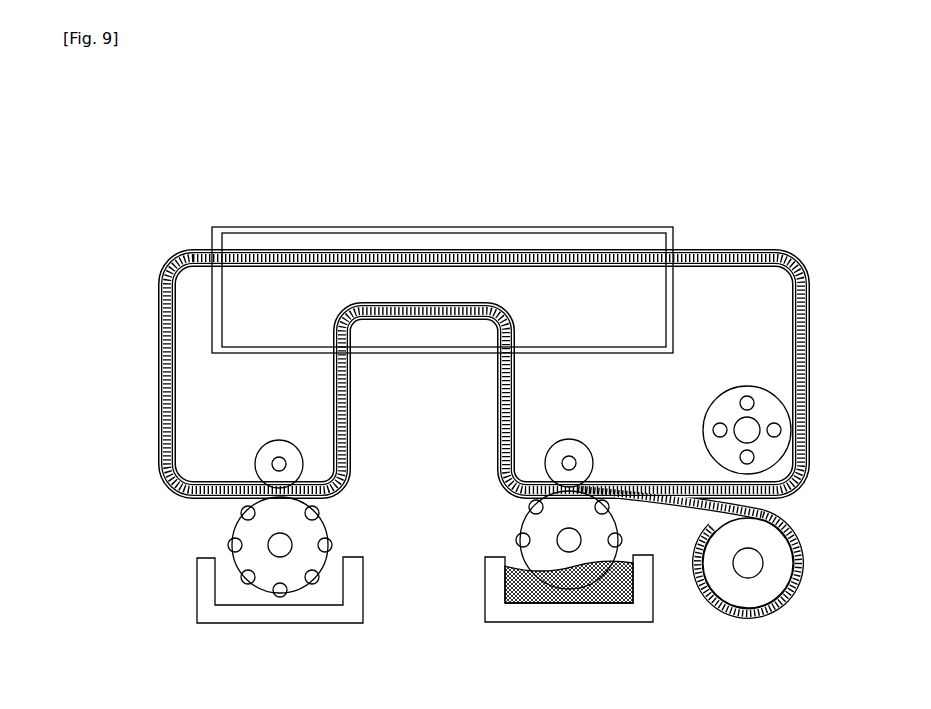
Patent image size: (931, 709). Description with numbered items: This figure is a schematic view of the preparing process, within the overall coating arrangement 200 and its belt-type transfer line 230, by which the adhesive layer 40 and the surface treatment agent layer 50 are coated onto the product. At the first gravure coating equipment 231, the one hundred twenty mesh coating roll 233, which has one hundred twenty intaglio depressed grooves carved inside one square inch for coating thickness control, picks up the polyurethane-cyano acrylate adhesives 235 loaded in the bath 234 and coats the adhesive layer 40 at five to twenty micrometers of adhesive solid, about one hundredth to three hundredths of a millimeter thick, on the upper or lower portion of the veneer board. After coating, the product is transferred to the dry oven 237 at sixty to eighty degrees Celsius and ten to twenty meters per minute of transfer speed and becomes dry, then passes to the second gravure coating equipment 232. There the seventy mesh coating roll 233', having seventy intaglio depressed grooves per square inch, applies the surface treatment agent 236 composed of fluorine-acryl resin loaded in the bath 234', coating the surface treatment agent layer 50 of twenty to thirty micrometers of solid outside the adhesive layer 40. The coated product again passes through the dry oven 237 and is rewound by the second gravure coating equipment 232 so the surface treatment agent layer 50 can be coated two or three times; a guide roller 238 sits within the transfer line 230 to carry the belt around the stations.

The manufacturing apparatus 200 is at (164, 128).
The belt unit 230 is at (709, 175).
The dry oven 237 is at (420, 226).
The adhesive layer 40 is at (277, 260).
The surface treatment agent layer 50 is at (598, 250).
The tension roller 238 is at (715, 410).
The 70 mesh coating roll 233' is at (220, 547).
The 120 mesh coating roll 233 is at (508, 540).
The gravure 2 coating equipment 232 is at (176, 627).
The gravure 1 coating equipment 231 is at (478, 625).
The bath 234' is at (280, 645).
The bath 234 is at (569, 647).
The polyurethane-cyano acrylate adhesives 235 is at (616, 600).
The surface treatment agent 236 is at (310, 593).